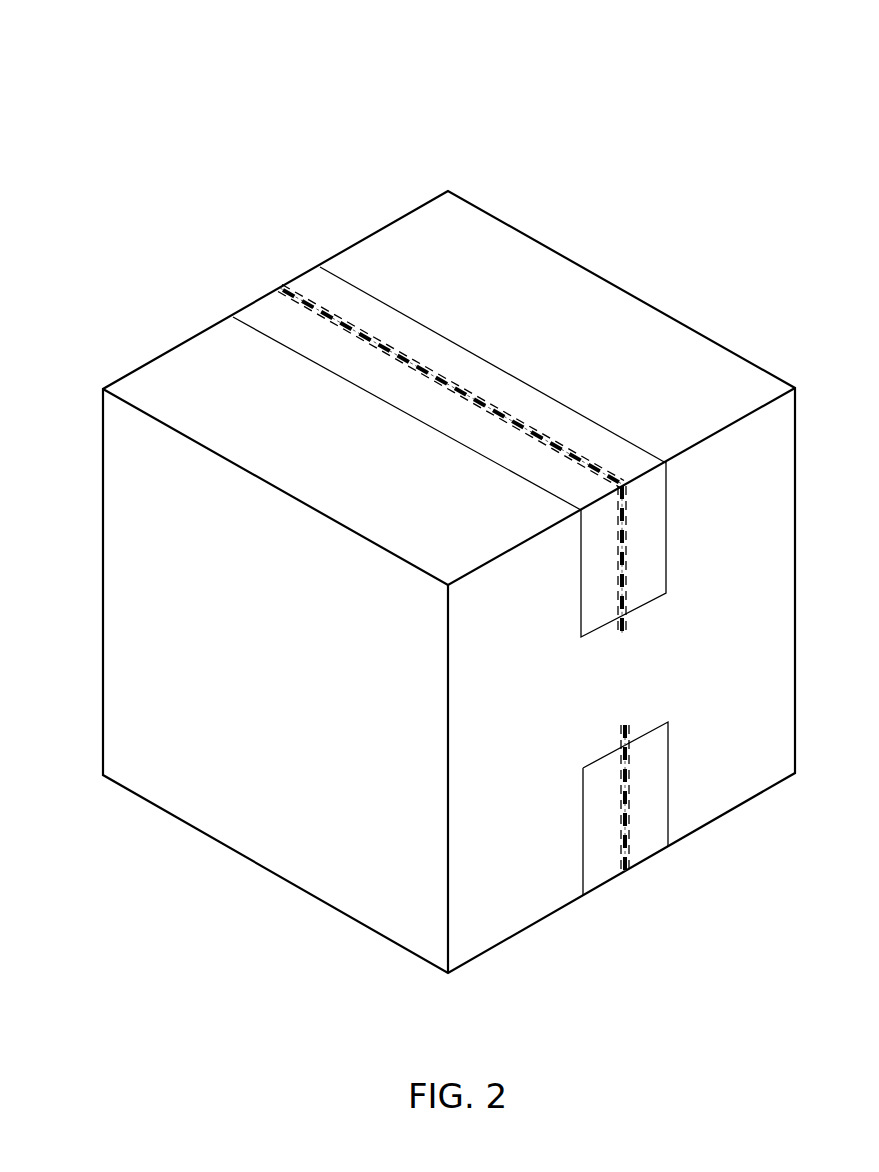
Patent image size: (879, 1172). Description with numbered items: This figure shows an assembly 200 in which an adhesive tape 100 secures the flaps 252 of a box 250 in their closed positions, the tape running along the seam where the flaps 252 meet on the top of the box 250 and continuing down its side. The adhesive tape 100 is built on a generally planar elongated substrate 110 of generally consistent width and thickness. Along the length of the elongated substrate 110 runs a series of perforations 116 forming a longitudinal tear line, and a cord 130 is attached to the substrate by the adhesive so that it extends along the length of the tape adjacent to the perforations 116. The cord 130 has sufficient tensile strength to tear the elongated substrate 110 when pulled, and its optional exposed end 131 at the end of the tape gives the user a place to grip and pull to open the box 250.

The assembly 200 is at (115, 138).
The box 250 is at (301, 694).
The flaps 252 is at (589, 330).
The adhesive tape 100 is at (313, 287).
The elongated substrate 110 is at (462, 363).
The series of perforations 116 is at (387, 342).
The cord 130 is at (503, 420).
The exposed end 131 is at (622, 608).